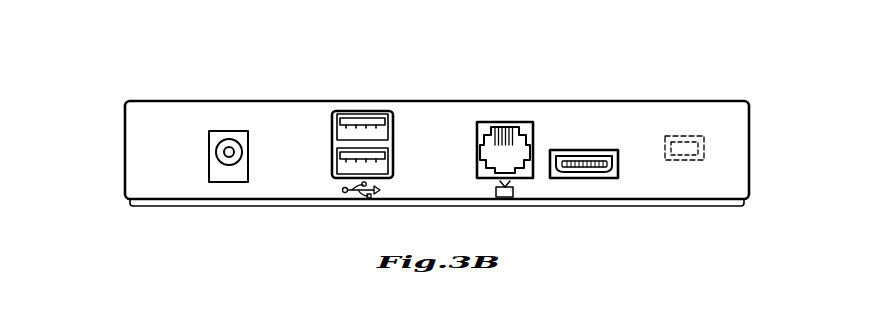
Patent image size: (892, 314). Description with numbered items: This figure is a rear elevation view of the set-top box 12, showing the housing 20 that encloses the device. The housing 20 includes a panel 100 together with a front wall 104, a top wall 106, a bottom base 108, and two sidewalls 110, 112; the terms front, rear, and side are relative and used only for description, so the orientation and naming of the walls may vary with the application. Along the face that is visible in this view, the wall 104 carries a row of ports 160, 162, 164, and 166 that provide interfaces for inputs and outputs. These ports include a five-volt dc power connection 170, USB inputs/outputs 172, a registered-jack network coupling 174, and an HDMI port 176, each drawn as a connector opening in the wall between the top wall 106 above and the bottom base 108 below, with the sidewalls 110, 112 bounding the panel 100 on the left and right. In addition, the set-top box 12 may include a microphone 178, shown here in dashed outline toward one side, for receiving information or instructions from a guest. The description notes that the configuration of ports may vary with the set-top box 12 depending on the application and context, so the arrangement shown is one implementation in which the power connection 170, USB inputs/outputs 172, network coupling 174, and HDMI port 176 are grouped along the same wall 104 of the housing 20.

The set-top box 12 is at (149, 82).
The housing 20 is at (137, 207).
The panel 100 is at (721, 92).
The front wall 104 is at (176, 192).
The top wall 106 is at (195, 100).
The bottom base 108 is at (286, 207).
The sidewall 110 is at (125, 153).
The sidewall 112 is at (750, 152).
The port 160 is at (241, 133).
The port 162 is at (360, 110).
The port 164 is at (507, 123).
The port 166 is at (583, 148).
The 5V dc power connection 170 is at (228, 180).
The USB inputs/outputs 172 is at (343, 177).
The RJ-45 coupling 174 is at (524, 172).
The HDMI port 176 is at (612, 180).
The microphone 178 is at (690, 162).